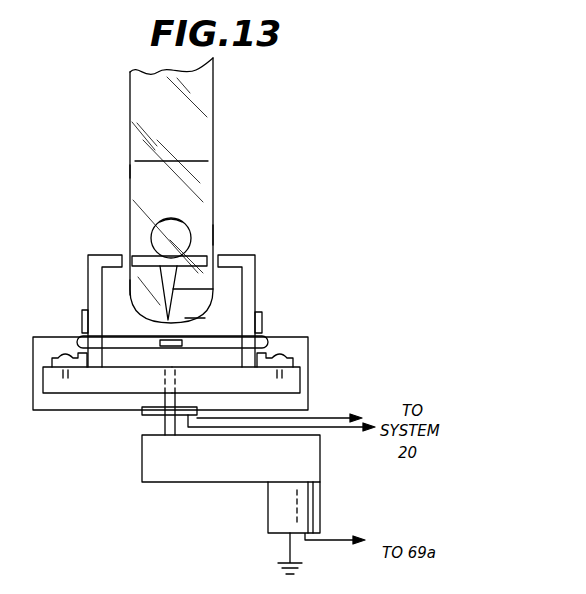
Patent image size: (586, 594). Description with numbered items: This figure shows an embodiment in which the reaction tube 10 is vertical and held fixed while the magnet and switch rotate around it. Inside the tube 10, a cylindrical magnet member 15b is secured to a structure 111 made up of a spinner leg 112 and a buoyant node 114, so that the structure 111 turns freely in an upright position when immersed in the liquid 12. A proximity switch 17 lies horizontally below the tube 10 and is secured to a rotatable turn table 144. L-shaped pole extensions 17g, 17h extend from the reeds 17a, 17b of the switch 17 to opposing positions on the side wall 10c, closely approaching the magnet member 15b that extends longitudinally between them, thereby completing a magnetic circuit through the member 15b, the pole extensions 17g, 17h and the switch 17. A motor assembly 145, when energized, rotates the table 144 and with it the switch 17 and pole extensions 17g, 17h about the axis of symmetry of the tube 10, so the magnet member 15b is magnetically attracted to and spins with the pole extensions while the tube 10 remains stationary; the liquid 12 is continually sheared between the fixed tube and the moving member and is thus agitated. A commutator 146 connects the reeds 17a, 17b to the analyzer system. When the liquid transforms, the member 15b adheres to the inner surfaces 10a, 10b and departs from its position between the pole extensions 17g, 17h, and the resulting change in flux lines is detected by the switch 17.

The tube 10 is at (213, 118).
The inner surface 10a is at (135, 291).
The inner surface 10b is at (190, 303).
The side wall 10c is at (213, 233).
The liquid 12 is at (130, 171).
The cylindrical magnet member 15b is at (137, 256).
The proximity switch 17 is at (115, 330).
The reed 17a is at (107, 375).
The reed 17b is at (230, 350).
The pole extension 17g is at (88, 258).
The pole extension 17h is at (230, 258).
The structure 111 is at (180, 222).
The spinner leg 112 is at (213, 289).
The buoyant node 114 is at (182, 232).
The rotatable turn table 144 is at (293, 383).
The motor assembly 145 is at (195, 474).
The commutator 146 is at (143, 415).